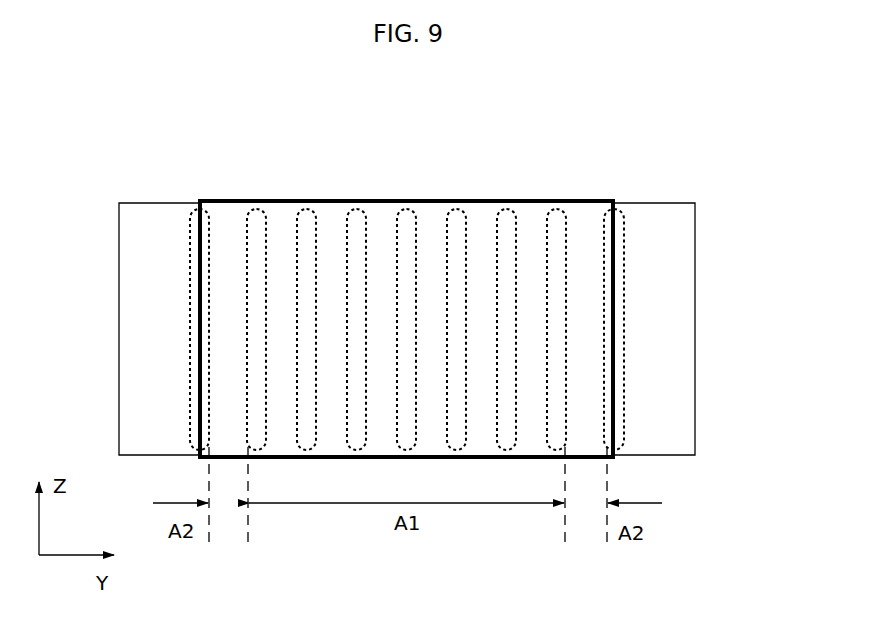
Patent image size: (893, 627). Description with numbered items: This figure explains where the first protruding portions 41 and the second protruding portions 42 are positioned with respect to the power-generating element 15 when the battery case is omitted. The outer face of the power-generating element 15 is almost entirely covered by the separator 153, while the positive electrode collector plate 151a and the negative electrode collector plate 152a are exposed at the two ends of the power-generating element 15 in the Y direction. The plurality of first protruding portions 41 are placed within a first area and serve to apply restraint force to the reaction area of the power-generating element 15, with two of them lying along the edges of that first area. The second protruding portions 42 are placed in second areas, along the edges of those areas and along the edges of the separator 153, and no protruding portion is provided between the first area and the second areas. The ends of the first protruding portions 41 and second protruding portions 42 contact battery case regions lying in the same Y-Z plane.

The power-generating element 15 is at (591, 192).
The first protruding portion 41 is at (239, 218).
The second protruding portion 42 is at (192, 228).
The separator 153 is at (382, 230).
The positive electrode collector plate 151a is at (137, 262).
The negative electrode collector plate 152a is at (677, 270).